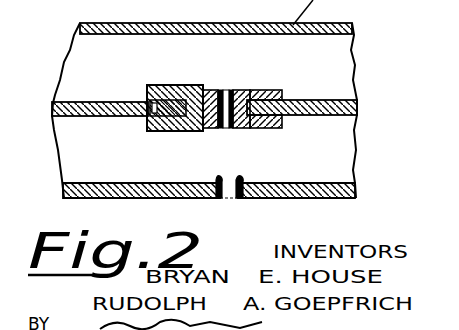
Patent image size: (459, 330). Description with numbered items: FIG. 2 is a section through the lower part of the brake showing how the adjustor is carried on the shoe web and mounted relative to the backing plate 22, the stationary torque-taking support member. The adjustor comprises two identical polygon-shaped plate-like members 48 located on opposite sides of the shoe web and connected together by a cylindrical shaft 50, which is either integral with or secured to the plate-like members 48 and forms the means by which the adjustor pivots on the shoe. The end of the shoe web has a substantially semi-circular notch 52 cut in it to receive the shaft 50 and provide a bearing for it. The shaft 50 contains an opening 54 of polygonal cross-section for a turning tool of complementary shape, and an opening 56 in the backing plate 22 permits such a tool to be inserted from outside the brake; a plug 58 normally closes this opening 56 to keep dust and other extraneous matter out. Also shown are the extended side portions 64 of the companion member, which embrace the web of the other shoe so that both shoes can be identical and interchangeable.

The backing plate 22 is at (350, 197).
The plate-like members 48 is at (262, 92).
The cylindrical shaft 50 is at (237, 95).
The semi-circular notch 52 is at (250, 127).
The opening 54 is at (232, 128).
The opening 56 is at (265, 197).
The plug 58 is at (222, 197).
The extended side portions 64 is at (152, 118).